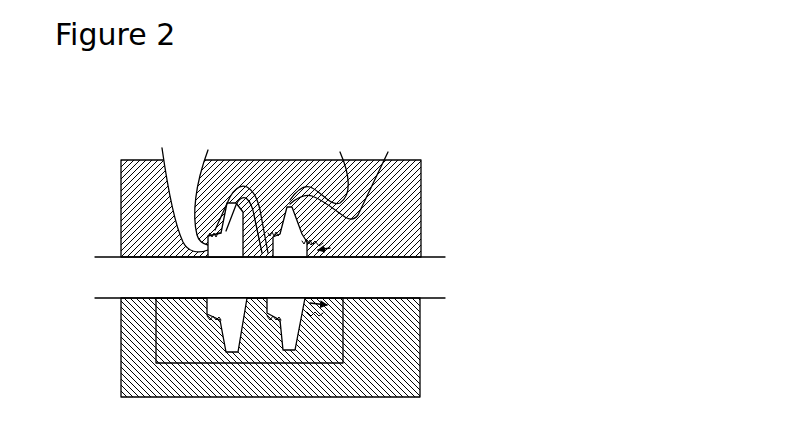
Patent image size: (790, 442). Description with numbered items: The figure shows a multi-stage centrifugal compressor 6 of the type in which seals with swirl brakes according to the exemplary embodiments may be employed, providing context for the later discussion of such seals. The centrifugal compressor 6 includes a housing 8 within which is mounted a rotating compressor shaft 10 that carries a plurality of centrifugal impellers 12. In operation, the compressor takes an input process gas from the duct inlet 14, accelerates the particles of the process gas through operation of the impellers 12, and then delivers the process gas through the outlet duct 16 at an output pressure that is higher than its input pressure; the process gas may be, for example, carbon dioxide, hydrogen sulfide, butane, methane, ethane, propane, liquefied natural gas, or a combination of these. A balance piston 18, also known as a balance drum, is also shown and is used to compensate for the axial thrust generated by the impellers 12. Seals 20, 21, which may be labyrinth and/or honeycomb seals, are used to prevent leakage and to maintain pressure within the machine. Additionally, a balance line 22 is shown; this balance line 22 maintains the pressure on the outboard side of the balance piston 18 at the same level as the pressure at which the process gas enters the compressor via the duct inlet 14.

The multi-stage centrifugal compressor 6 is at (134, 108).
The housing 8 is at (421, 204).
The compressor shaft 10 is at (435, 283).
The centrifugal impeller 12 is at (203, 316).
The duct inlet 14 is at (186, 146).
The outlet duct 16 is at (366, 152).
The balance piston 18 is at (328, 278).
The seal 20 is at (213, 230).
The seal 21 is at (314, 244).
The balance line 22 is at (343, 340).